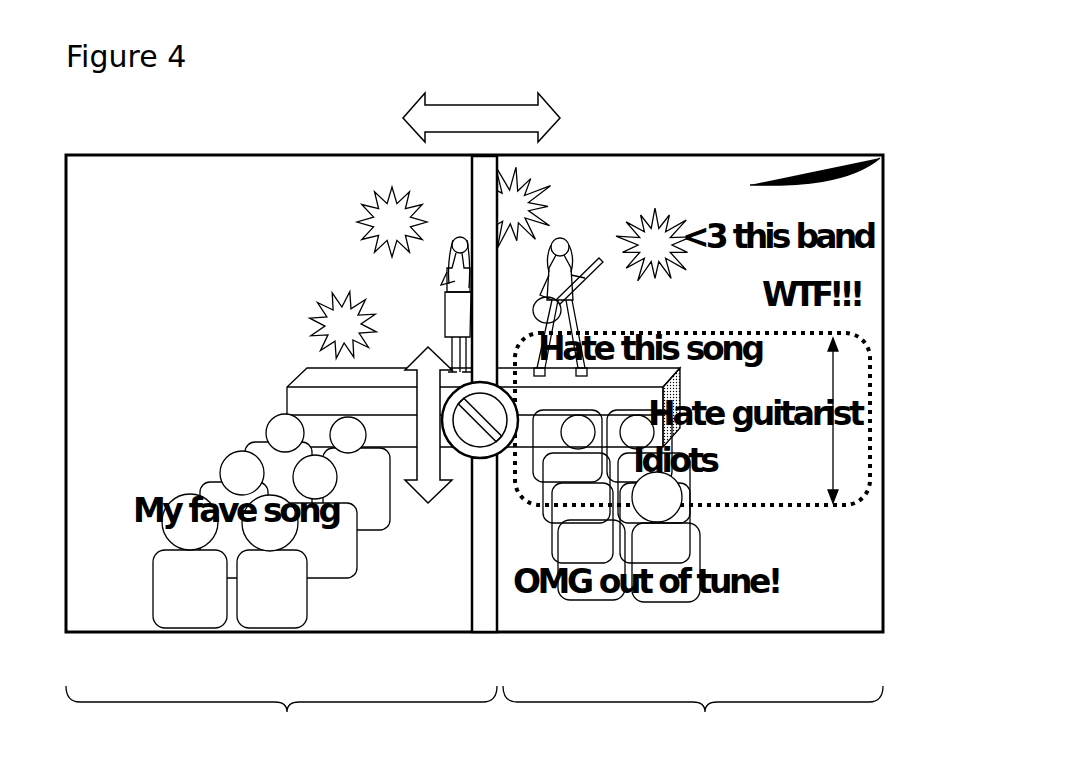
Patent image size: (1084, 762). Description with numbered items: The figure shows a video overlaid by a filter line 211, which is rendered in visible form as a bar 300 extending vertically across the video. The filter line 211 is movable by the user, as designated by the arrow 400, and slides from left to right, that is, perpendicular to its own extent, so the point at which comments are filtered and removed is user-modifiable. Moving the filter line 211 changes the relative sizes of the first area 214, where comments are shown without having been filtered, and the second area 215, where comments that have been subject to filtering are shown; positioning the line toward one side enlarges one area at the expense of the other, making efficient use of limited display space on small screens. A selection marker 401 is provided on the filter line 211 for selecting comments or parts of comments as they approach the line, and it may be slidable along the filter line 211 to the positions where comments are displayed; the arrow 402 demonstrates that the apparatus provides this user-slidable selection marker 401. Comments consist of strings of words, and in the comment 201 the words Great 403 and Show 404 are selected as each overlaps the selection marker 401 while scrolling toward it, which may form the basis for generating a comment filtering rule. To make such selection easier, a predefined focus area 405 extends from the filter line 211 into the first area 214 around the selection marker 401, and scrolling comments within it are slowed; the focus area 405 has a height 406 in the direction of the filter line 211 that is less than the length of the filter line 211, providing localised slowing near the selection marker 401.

The comment 201 is at (883, 156).
The filter line 211 is at (466, 182).
The first area 214 is at (693, 722).
The second area 215 is at (281, 722).
The bar 300 is at (470, 205).
The arrow 400 is at (503, 116).
The selection marker 401 is at (440, 480).
The arrow 402 is at (458, 447).
The word 403 is at (603, 174).
The word 404 is at (700, 170).
The focus area 405 is at (807, 507).
The height 406 is at (837, 453).